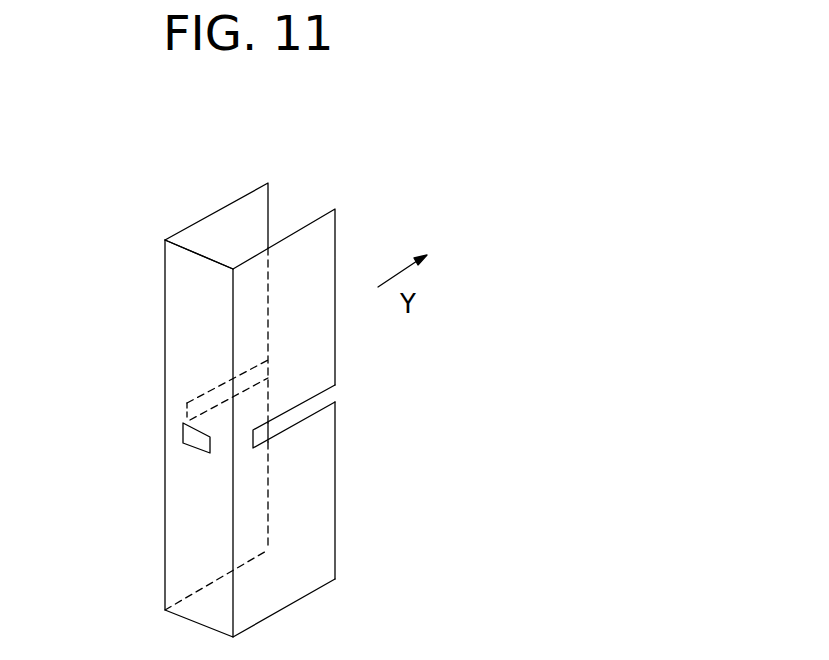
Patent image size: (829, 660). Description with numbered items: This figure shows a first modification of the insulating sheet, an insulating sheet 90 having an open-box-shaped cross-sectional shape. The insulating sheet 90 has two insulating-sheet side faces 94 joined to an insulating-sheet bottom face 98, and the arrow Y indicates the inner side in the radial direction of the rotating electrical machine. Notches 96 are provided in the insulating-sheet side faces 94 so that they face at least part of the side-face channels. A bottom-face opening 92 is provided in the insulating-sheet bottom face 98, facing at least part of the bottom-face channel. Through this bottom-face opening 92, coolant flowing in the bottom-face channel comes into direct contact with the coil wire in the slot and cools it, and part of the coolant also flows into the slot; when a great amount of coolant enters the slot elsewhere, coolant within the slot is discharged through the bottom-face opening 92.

The insulating sheet 90 is at (307, 170).
The bottom-face opening 92 is at (185, 432).
The insulating-sheet side faces 94 is at (223, 228).
The notches 96 is at (262, 361).
The insulating-sheet bottom face 98 is at (188, 283).